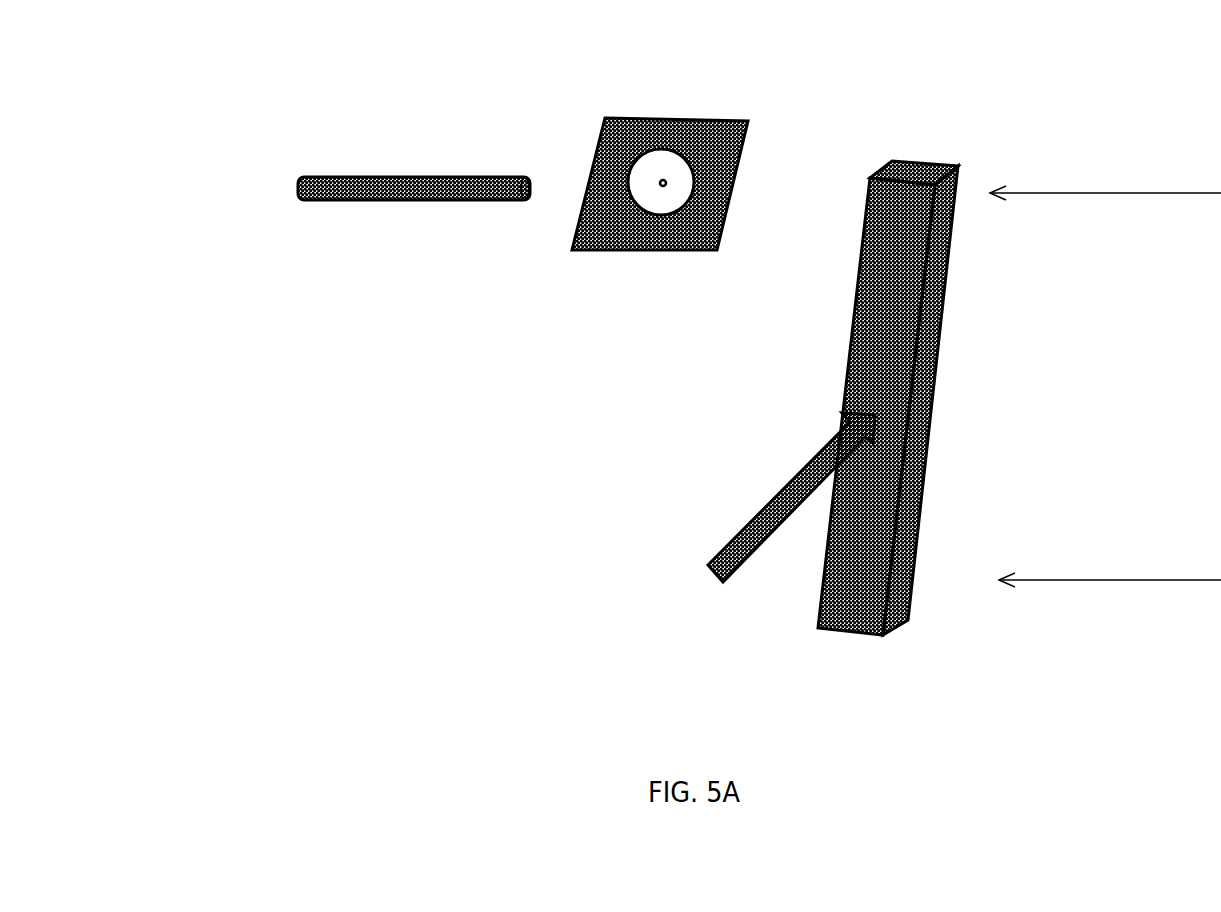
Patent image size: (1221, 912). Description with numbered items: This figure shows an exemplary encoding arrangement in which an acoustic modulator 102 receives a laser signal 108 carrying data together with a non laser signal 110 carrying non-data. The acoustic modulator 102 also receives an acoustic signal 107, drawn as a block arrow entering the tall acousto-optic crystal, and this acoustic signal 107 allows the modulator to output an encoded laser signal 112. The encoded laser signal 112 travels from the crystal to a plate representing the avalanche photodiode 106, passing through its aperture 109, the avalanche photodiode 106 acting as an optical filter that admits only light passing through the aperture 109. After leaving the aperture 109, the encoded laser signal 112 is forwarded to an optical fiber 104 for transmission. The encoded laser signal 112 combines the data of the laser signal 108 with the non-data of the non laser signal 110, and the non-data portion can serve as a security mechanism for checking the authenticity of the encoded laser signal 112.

The acoustic modulator 102 is at (756, 357).
The optical fiber 104 is at (323, 233).
The avalanche photodiode 106 is at (647, 238).
The acoustic signal 107 is at (777, 497).
The laser signal 108 is at (1105, 246).
The aperture 109 is at (673, 146).
The non laser signal 110 is at (1110, 632).
The encoded laser signal 112 is at (842, 372).